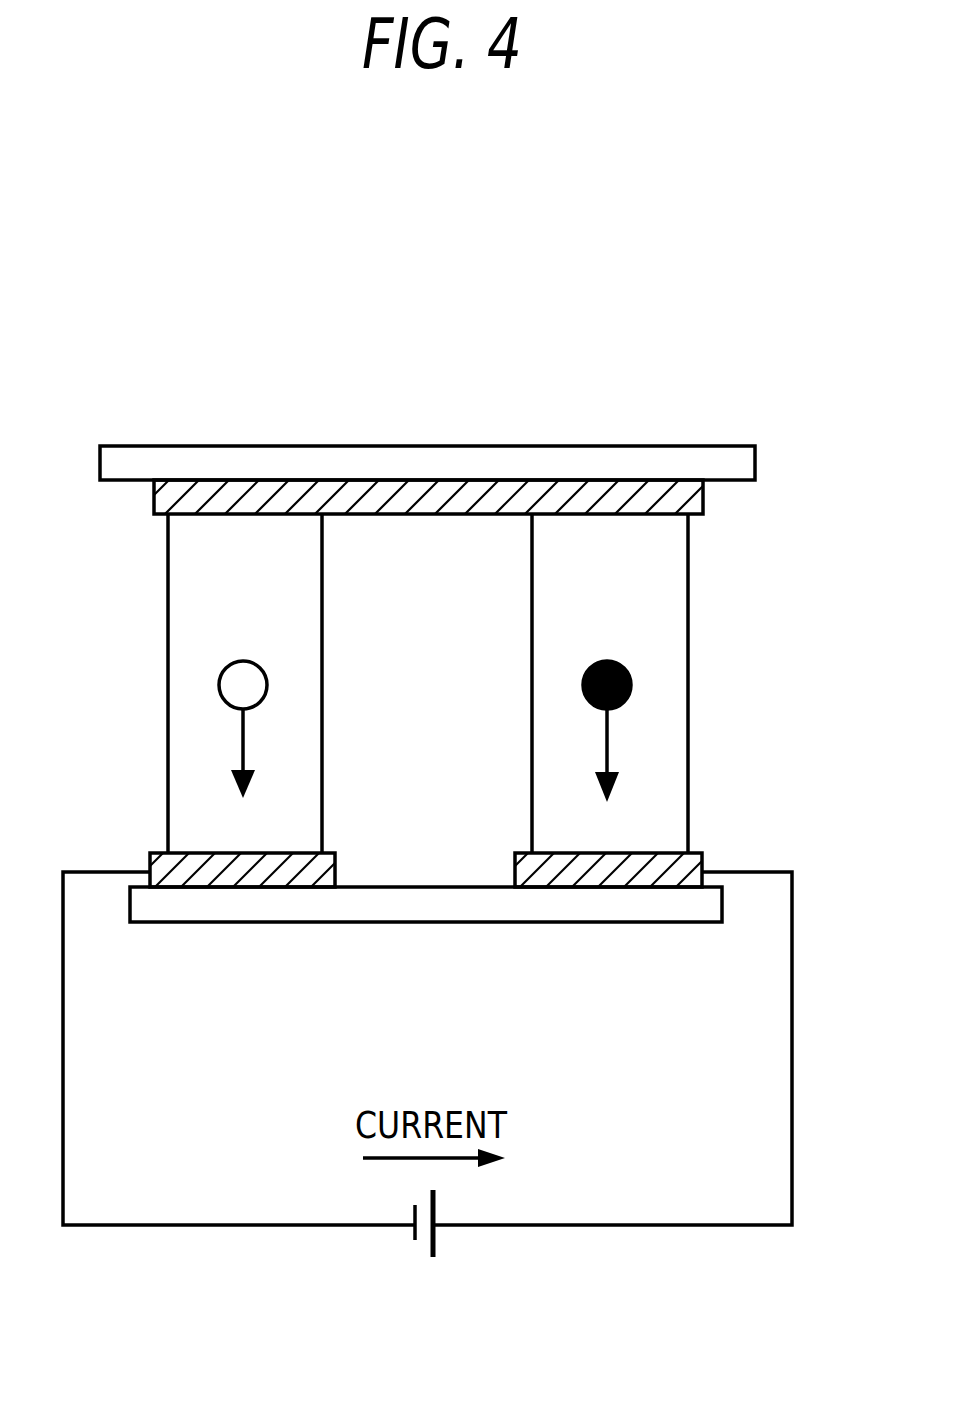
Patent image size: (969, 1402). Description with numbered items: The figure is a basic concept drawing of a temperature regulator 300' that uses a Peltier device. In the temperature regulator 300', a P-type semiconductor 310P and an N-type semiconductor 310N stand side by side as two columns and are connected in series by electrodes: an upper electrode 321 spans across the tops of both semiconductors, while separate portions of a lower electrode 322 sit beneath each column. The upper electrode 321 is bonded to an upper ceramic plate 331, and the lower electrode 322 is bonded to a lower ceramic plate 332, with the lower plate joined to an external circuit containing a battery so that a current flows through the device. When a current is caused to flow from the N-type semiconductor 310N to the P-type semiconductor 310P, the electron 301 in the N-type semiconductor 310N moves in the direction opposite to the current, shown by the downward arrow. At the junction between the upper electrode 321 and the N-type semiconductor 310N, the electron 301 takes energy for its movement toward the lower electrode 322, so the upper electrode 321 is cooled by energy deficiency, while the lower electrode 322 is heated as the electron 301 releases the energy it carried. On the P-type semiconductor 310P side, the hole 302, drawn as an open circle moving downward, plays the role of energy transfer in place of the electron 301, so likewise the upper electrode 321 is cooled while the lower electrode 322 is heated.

The temperature regulator 300' is at (460, 626).
The ceramic plate 331 is at (740, 466).
The upper electrode 321 is at (705, 497).
The P-type semiconductor 310P is at (190, 594).
The N-type semiconductor 310N is at (668, 604).
The hole 302 is at (219, 687).
The electron 301 is at (631, 683).
The lower electrode 322 is at (697, 860).
The ceramic plate 332 is at (606, 910).